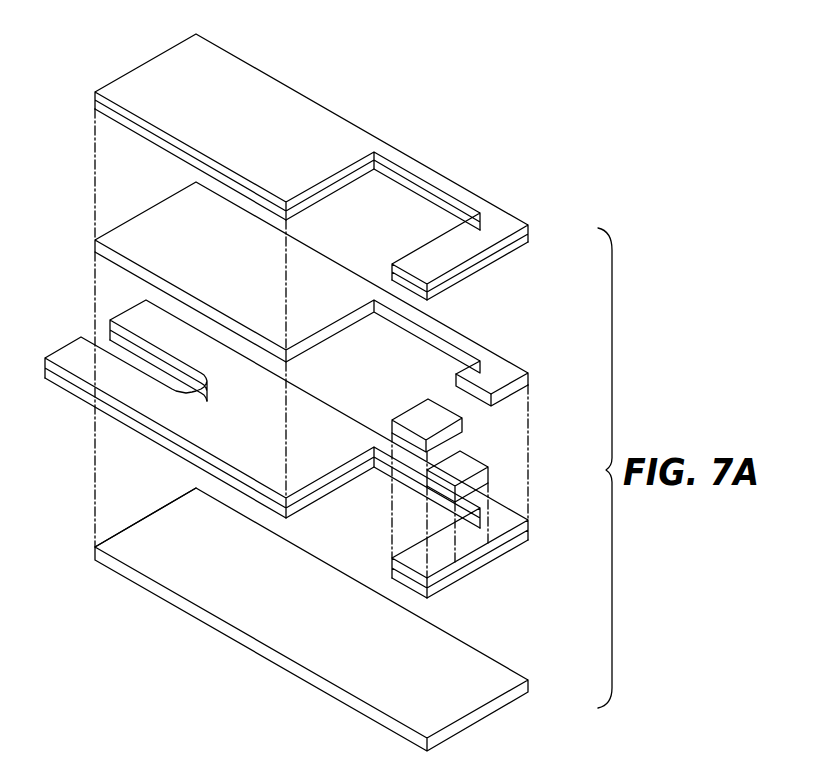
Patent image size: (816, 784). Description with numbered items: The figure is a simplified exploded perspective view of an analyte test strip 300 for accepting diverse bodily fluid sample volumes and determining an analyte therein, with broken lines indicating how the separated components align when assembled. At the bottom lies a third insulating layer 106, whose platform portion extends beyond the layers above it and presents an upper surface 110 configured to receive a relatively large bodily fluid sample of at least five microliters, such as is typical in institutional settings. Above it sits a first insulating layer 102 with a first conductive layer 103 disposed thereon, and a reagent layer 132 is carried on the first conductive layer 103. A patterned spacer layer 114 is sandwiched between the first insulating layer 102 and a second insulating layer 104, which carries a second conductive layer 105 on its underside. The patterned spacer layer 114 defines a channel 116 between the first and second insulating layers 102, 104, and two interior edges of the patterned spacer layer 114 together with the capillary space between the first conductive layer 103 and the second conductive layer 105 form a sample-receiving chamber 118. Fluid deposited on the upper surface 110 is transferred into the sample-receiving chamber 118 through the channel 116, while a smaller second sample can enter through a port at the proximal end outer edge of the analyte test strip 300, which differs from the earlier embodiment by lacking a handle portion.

The analyte test strip 300 is at (491, 83).
The second insulating layer 104 is at (527, 233).
The second conductive layer 105 is at (508, 252).
The patterned spacer layer 114 is at (422, 418).
The channel 116 is at (468, 404).
The sample-receiving chamber 118 is at (462, 400).
The reagent layer 132 is at (465, 465).
The first conductive layer 103 is at (507, 535).
The first insulating layer 102 is at (473, 565).
The third insulating layer 106 is at (194, 481).
The upper surface 110 is at (342, 647).